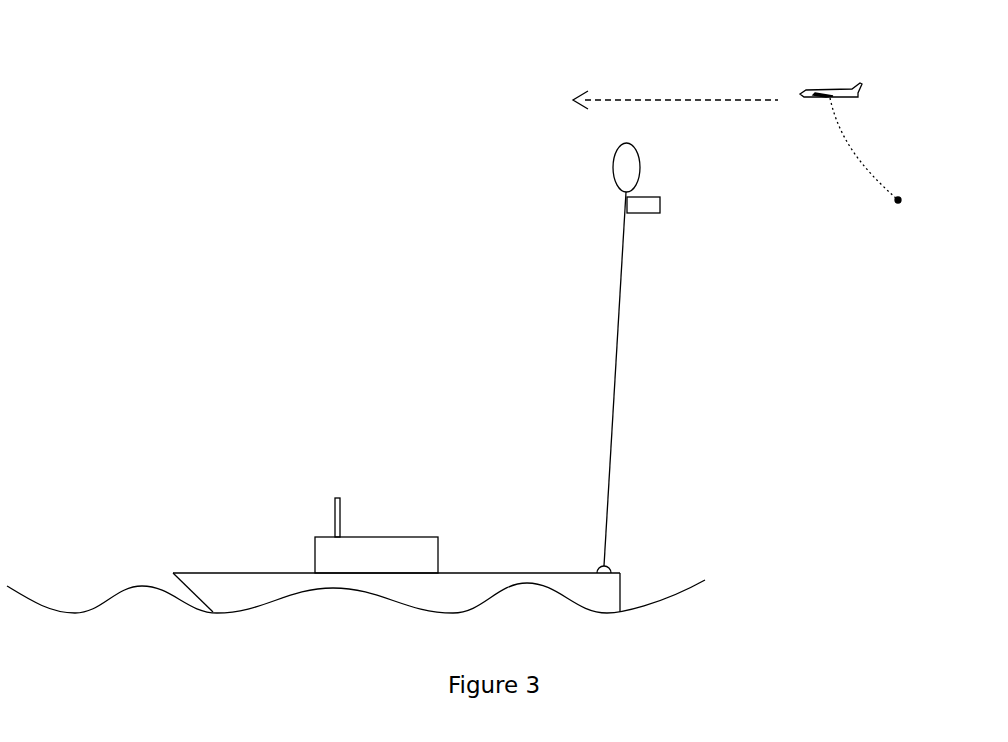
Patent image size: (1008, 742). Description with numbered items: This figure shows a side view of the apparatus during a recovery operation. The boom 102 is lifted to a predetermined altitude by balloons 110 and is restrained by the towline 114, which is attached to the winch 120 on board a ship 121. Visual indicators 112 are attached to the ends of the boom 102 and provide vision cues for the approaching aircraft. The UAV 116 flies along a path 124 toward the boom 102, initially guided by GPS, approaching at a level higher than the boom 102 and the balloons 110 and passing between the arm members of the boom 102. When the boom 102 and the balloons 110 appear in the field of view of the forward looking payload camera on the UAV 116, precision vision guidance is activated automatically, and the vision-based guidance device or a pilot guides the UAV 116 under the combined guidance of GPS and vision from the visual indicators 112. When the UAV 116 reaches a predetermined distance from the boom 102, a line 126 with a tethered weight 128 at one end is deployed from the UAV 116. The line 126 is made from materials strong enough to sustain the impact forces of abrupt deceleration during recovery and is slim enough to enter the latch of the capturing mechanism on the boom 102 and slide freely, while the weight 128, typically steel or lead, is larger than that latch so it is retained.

The boom 102 is at (638, 341).
The balloons 110 is at (632, 167).
The visual indicators 112 is at (660, 213).
The towline 114 is at (612, 412).
The UAV 116 is at (820, 87).
The winch 120 is at (613, 567).
The ship 121 is at (478, 572).
The path 124 is at (607, 103).
The line 126 is at (843, 138).
The tethered weight 128 is at (893, 198).